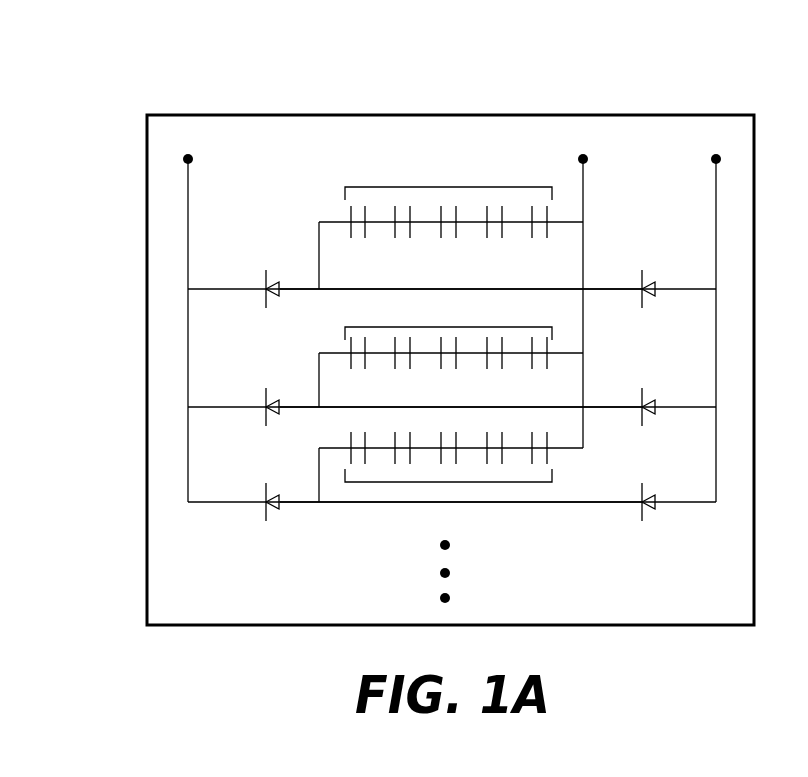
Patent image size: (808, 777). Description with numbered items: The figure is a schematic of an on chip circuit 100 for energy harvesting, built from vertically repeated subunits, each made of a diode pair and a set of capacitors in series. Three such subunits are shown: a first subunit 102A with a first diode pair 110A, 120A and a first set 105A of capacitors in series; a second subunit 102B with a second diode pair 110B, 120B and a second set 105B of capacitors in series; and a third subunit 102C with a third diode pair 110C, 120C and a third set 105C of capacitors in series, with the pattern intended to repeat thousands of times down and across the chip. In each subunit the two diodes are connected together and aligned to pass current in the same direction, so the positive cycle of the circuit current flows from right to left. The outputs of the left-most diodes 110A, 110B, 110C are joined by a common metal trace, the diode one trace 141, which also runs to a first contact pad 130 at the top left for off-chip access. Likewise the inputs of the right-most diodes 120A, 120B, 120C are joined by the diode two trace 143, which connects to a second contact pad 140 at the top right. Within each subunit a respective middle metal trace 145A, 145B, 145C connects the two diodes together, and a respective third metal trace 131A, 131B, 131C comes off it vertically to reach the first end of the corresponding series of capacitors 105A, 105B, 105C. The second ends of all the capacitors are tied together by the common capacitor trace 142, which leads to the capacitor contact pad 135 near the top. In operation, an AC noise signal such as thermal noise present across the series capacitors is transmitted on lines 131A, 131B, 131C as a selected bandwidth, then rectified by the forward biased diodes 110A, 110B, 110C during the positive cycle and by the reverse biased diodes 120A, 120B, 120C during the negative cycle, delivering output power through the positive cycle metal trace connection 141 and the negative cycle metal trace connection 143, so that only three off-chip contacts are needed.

The on chip circuit 100 is at (543, 113).
The first subunit 102A is at (206, 264).
The second subunit 102B is at (217, 387).
The third subunit 102C is at (215, 473).
The first set of capacitors in series 105A is at (450, 186).
The second set of capacitors in series 105B is at (457, 315).
The third set of capacitors in series 105C is at (443, 482).
The first diode 110A is at (277, 282).
The second diode 110B is at (277, 400).
The third diode 110C is at (277, 506).
The fourth diode 120A is at (660, 283).
The fifth diode 120B is at (650, 402).
The sixth diode 120C is at (653, 506).
The first contact pad 130 is at (223, 158).
The third metal trace 131A is at (319, 243).
The third metal trace 131B is at (319, 367).
The third metal trace 131C is at (320, 483).
The contact pad labeled C 135 is at (555, 157).
The second contact pad 140 is at (685, 157).
The D1 trace 141 is at (188, 202).
The C trace 142 is at (583, 325).
The D2 trace 143 is at (717, 332).
The middle metal trace 145A is at (492, 288).
The middle metal trace 145B is at (487, 407).
The middle metal trace 145C is at (580, 500).